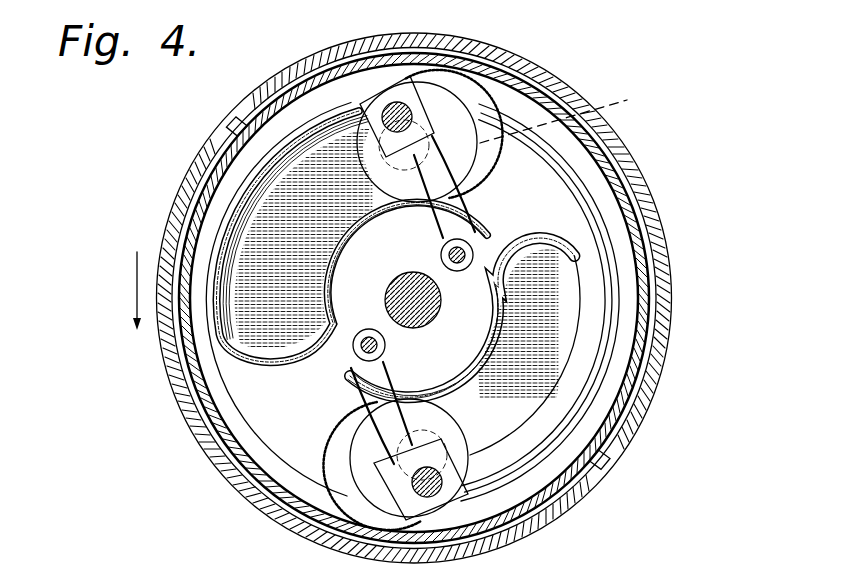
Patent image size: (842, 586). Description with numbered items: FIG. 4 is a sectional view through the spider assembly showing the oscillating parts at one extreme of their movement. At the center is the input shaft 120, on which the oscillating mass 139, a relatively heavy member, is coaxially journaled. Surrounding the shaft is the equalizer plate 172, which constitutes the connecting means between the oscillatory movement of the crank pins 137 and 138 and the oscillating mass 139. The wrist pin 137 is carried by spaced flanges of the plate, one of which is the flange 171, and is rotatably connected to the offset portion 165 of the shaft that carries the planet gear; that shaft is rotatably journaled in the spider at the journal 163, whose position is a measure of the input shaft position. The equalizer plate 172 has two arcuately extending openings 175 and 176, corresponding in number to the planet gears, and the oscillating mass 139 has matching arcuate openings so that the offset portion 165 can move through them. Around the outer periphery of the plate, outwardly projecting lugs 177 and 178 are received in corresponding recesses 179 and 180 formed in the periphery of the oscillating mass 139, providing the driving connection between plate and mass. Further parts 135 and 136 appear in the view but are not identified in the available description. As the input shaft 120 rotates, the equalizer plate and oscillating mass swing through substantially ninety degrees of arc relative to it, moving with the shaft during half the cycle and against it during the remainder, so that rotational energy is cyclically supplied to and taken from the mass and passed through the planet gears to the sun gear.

The input shaft 120 is at (383, 291).
The rotor arm 135 is at (473, 210).
The lower roller pocket 136 is at (352, 408).
The pivot or wrist pin 137 is at (459, 271).
The crank pin 138 is at (360, 351).
The oscillating mass 139 is at (283, 85).
The journal 163 is at (572, 115).
The offset portion 165 is at (424, 98).
The flange 171 is at (407, 280).
The equalizer plate 172 is at (552, 172).
The arcuate opening 175 is at (273, 335).
The arcuate opening 176 is at (567, 253).
The lug 177 is at (236, 122).
The lug 178 is at (598, 458).
The recess 179 is at (212, 148).
The recess 180 is at (600, 470).